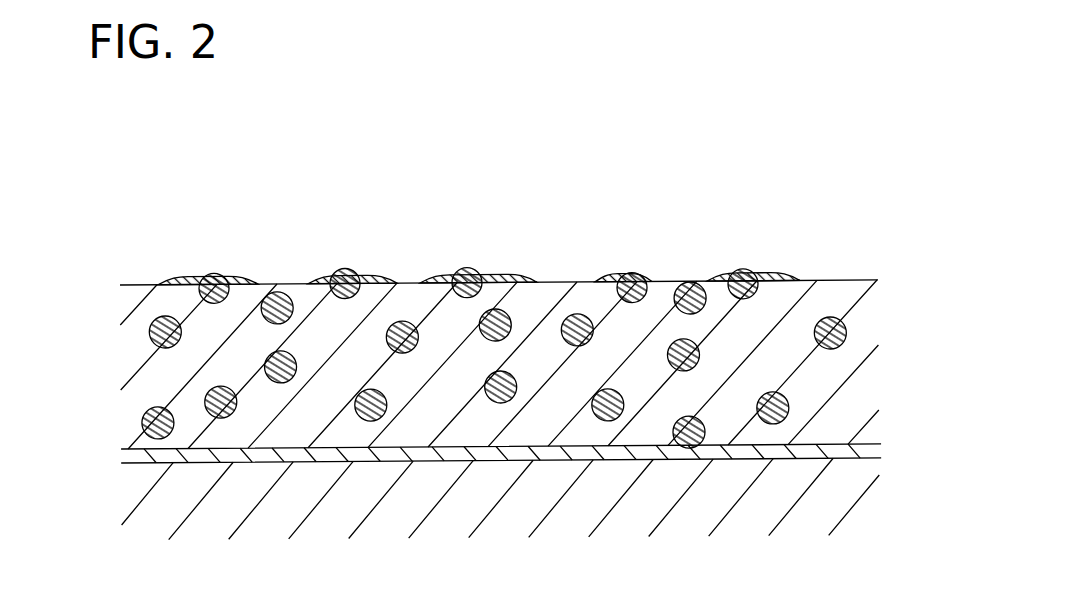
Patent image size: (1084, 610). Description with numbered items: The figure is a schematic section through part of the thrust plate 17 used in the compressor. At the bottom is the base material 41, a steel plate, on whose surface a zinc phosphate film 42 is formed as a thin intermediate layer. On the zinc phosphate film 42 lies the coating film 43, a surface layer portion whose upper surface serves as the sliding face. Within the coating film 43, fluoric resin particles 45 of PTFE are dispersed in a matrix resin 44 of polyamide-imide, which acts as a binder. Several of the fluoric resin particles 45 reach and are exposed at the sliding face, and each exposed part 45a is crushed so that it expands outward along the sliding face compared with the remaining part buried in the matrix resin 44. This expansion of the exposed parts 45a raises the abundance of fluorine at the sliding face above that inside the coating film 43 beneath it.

The thrust plate 17 is at (837, 239).
The base material 41 is at (718, 510).
The zinc phosphate film 42 is at (490, 461).
The coating film 43 is at (495, 383).
The matrix resin 44 is at (313, 415).
The fluoric resin particles 45 is at (196, 316).
The exposed part 45a is at (190, 280).